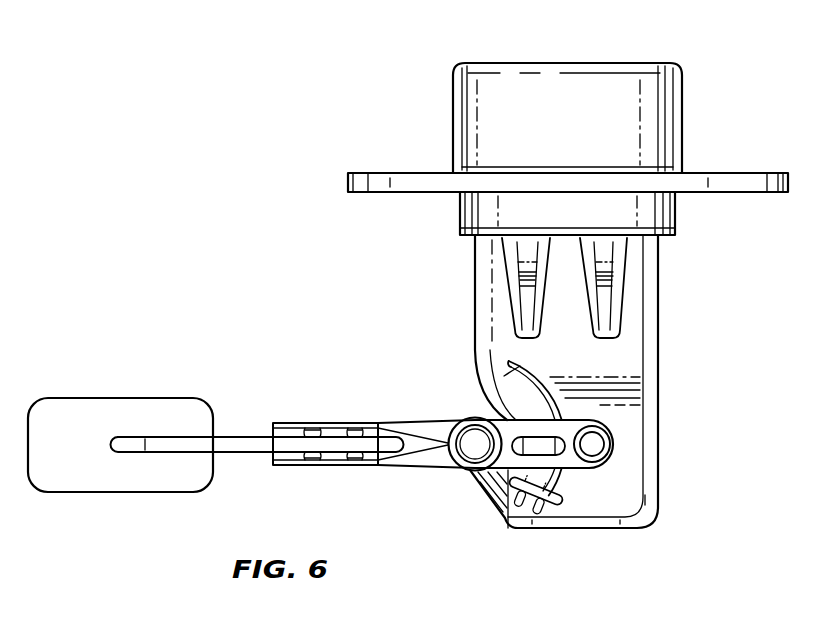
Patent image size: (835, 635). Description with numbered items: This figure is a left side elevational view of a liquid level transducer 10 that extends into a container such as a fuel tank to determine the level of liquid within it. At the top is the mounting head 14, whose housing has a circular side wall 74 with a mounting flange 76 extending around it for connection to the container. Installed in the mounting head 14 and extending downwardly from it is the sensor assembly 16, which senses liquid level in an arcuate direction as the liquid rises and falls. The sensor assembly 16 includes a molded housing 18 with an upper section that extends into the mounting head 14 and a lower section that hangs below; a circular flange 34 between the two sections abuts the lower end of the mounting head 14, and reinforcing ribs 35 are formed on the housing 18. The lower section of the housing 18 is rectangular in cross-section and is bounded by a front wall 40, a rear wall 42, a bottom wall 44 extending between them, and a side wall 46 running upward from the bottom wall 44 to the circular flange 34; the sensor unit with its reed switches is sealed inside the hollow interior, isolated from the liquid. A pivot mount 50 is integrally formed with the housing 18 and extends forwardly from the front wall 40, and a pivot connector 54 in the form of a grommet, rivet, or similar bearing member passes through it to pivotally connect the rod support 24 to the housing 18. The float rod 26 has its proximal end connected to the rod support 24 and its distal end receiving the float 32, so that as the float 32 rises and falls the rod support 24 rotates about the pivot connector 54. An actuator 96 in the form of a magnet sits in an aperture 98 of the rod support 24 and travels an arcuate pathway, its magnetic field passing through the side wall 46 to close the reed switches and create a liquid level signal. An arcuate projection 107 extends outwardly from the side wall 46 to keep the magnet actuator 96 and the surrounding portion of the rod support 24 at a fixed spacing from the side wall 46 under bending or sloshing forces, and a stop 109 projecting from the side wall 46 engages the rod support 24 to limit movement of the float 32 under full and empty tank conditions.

The liquid level transducer 10 is at (216, 148).
The mounting head 14 is at (655, 47).
The sensor assembly 16 is at (678, 310).
The housing 18 is at (483, 293).
The rod support 24 is at (335, 468).
The float rod 26 is at (258, 417).
The float 32 is at (105, 397).
The circular flange 34 is at (677, 232).
The reinforcing ribs 35 is at (520, 246).
The front wall 40 is at (473, 328).
The rear wall 42 is at (660, 363).
The bottom wall 44 is at (590, 532).
The side wall 46 is at (584, 361).
The pivot mount 50 is at (480, 413).
The pivot connector 54 is at (445, 470).
The circular side wall 74 is at (682, 118).
The mounting flange 76 is at (730, 170).
The actuator 96 is at (597, 446).
The aperture 98 is at (610, 450).
The arcuate projection 107 is at (503, 375).
The stop 109 is at (535, 518).